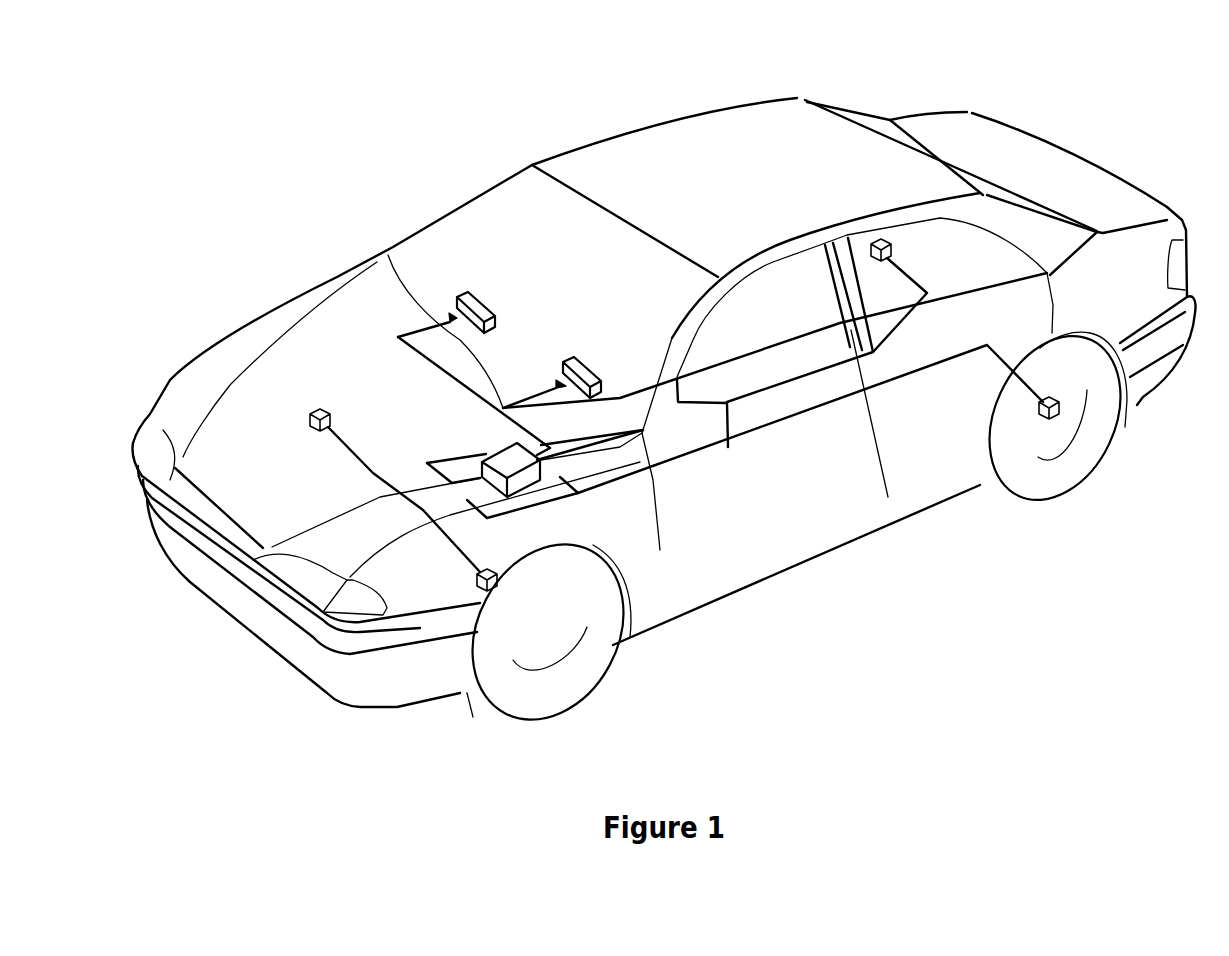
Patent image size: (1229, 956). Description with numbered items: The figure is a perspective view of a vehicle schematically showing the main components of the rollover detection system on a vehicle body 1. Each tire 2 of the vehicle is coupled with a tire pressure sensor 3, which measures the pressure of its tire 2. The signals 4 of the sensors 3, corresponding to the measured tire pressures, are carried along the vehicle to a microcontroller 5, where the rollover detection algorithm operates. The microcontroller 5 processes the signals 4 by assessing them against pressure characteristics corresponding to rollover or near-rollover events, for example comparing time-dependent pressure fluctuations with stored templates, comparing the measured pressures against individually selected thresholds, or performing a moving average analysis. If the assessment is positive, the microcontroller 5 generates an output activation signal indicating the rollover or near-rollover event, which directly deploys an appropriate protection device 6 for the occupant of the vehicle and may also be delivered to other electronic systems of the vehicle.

The vehicle body 1 is at (325, 261).
The tire 2 is at (1027, 477).
The tire pressure sensor 3 is at (310, 412).
The signals 4 is at (377, 477).
The microcontroller 5 is at (517, 463).
The protection device 6 is at (571, 363).